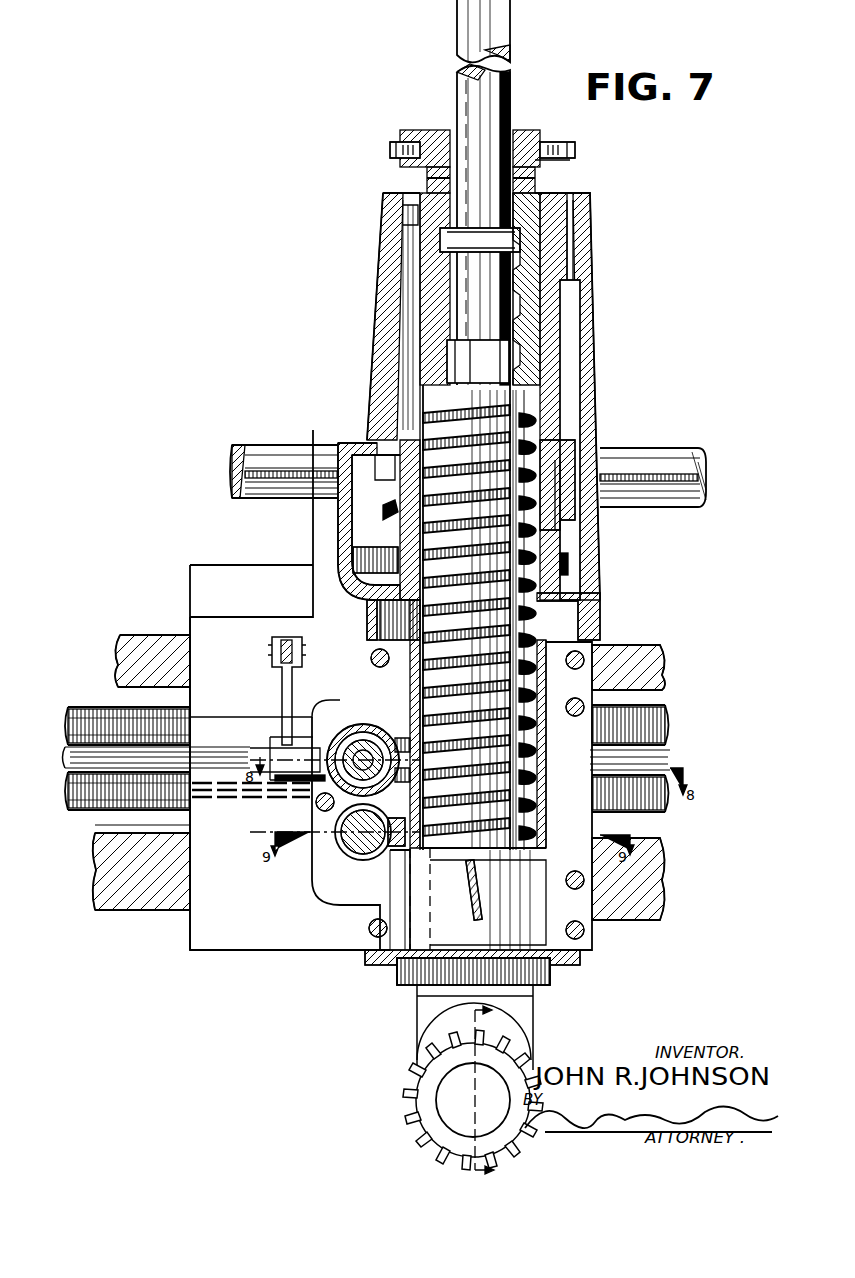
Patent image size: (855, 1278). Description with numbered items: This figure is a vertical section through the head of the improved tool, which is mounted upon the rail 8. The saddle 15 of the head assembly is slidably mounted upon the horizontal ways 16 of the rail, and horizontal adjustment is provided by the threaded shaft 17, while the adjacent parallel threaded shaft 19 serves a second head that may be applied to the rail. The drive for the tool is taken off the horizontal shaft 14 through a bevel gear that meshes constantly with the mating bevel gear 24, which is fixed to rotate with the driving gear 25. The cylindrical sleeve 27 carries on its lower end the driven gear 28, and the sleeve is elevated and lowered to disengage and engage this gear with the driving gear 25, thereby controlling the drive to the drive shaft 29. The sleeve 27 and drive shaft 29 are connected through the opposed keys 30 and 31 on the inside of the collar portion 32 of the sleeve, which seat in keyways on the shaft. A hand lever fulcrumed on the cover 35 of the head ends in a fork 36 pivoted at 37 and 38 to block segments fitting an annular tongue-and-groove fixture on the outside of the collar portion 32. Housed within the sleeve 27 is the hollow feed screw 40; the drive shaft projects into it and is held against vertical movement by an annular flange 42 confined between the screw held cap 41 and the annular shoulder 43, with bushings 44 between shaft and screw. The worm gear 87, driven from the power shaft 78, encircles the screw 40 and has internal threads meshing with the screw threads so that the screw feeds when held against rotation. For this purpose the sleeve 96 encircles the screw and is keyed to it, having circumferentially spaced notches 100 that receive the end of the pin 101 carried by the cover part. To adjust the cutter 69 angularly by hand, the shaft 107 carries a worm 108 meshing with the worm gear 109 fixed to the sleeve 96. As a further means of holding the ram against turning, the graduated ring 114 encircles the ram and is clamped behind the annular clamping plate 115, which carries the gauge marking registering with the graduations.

The drive shaft 29 is at (515, 95).
The key 31 is at (447, 130).
The pivot 38 is at (400, 138).
The key 30 is at (520, 130).
The pivot 37 is at (572, 143).
The fork 36 is at (570, 165).
The collar portion 32 is at (427, 178).
The screw held cap 41 is at (580, 203).
The bushings 44 is at (382, 260).
The annular flange 42 is at (578, 225).
The annular shoulder 43 is at (585, 253).
The cover 35 is at (578, 280).
The cylindrical sleeve 27 is at (555, 302).
The hollow feed screw 40 is at (555, 398).
The horizontal shaft 14 is at (630, 462).
The bevel gear 24 is at (380, 515).
The driving gear 25 is at (365, 562).
The driven gear 28 is at (566, 567).
The saddle 15 is at (230, 645).
The horizontal ways 16 is at (160, 655).
The worm gear 87 is at (612, 705).
The power shaft 78 is at (375, 665).
The threaded shaft 17 is at (70, 727).
The threaded shaft 19 is at (68, 790).
The rail 8 is at (110, 862).
The shaft 107 is at (345, 828).
The worm 108 is at (352, 850).
The worm gear 109 is at (385, 852).
The sleeve 96 is at (430, 885).
The notches 100 is at (395, 918).
The pin 101 is at (470, 912).
The annular clamping plate 115 is at (365, 967).
The ring 114 is at (400, 975).
The cutter 69 is at (403, 1106).